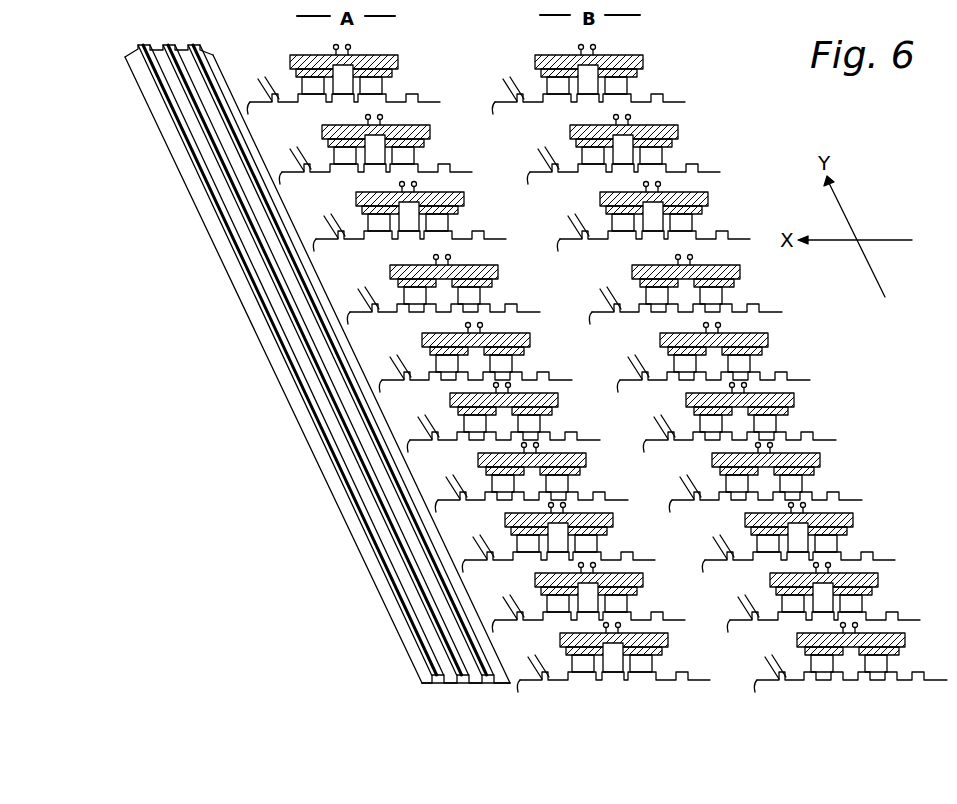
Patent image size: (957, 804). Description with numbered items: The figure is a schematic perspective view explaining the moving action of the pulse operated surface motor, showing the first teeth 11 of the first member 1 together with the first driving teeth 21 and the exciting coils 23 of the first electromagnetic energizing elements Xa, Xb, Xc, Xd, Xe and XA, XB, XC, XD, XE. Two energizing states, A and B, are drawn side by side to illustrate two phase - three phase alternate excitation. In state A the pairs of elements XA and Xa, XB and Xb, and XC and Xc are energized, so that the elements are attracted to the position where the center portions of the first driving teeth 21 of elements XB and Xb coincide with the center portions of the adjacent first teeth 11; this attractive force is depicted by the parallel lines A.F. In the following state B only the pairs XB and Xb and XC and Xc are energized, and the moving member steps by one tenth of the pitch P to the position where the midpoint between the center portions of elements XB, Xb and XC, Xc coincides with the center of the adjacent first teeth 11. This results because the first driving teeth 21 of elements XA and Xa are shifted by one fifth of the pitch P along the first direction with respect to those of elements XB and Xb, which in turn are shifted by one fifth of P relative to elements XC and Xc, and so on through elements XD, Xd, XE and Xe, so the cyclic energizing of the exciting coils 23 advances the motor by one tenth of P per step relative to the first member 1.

The first member 1 is at (448, 686).
The first teeth 11 is at (430, 607).
The first driving teeth 21 is at (385, 79).
The exciting coils 23 is at (425, 150).
The first electromagnetic energizing element Xa is at (398, 60).
The first electromagnetic energizing element Xb is at (430, 130).
The first electromagnetic energizing element Xc is at (464, 197).
The first electromagnetic energizing element Xd is at (498, 270).
The first electromagnetic energizing element Xe is at (530, 338).
The first electromagnetic energizing element XA is at (668, 638).
The first electromagnetic energizing element XB is at (643, 578).
The first electromagnetic energizing element XC is at (613, 518).
The first electromagnetic energizing element XD is at (586, 458).
The first electromagnetic energizing element XE is at (558, 398).
The pitch P is at (554, 183).
The attractive force A.F. is at (566, 153).